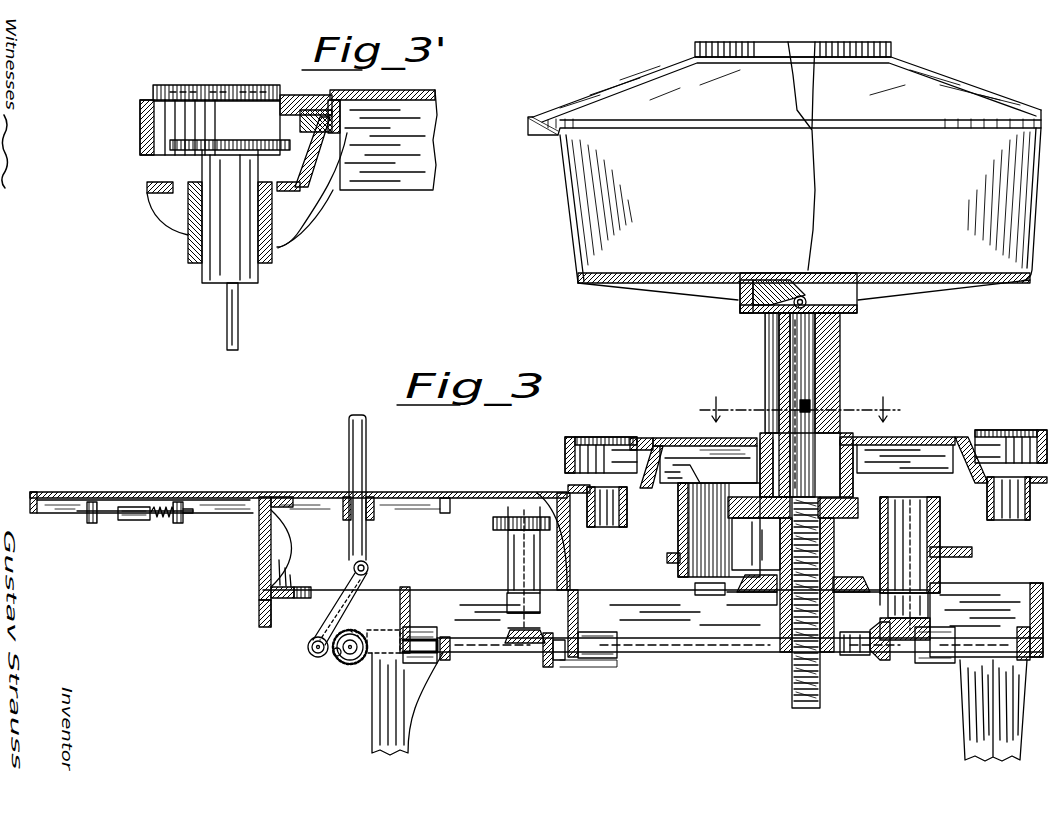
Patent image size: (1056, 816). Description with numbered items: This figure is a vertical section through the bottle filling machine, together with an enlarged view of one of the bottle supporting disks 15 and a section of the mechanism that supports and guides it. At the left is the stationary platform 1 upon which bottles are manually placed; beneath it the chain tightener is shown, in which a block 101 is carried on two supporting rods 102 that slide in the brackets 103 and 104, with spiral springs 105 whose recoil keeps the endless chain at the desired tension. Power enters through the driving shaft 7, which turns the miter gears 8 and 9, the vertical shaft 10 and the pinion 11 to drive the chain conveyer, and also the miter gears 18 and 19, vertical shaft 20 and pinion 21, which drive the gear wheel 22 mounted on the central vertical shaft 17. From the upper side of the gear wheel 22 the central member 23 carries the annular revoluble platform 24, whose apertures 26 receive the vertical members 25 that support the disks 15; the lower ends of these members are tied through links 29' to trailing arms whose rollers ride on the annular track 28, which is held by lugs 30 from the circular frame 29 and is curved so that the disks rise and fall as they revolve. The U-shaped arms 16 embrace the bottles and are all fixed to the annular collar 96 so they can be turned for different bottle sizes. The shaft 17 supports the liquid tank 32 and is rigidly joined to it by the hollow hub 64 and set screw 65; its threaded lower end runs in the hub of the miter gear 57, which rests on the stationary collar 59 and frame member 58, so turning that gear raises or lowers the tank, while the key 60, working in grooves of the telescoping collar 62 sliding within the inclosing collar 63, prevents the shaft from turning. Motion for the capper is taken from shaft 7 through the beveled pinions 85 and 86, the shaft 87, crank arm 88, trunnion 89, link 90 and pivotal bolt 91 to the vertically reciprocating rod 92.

In FIG. 3, the stationary platform 1 is at (102, 492).
In FIG. 3, the driving shaft 7 is at (973, 650).
In FIG. 3, the miter gear 8 is at (545, 667).
In FIG. 3, the miter gear 9 is at (510, 643).
In FIG. 3, the vertical shaft 10 is at (527, 563).
In FIG. 3, the pinion 11 is at (493, 523).
In FIG. 3', the bottle supporting disks 15 is at (200, 147).
In FIG. 3', the U-shaped arms 16 is at (163, 123).
In FIG. 3, the U-shaped arms 16 is at (593, 450).
In FIG. 3, the vertical shaft 17 is at (821, 377).
In FIG. 3, the miter gear 18 is at (873, 656).
In FIG. 3, the miter gear 19 is at (898, 645).
In FIG. 3, the vertical shaft 20 is at (900, 560).
In FIG. 3, the pinion 21 is at (927, 510).
In FIG. 3, the gear wheel 22 is at (730, 507).
In FIG. 3, the central member 23 is at (857, 467).
In FIG. 3', the revoluble platform 24 is at (427, 91).
In FIG. 3, the revoluble platform 24 is at (955, 437).
In FIG. 3', the vertical members 25 is at (188, 247).
In FIG. 3, the apertures 26 is at (613, 513).
In FIG. 3, the annular track 28 is at (977, 550).
In FIG. 3, the circular frame 29 is at (658, 568).
In FIG. 3', the links 29' is at (254, 316).
In FIG. 3, the lugs 30 is at (700, 585).
In FIG. 3, the liquid tank 32 is at (784, 177).
In FIG. 3, the miter gear 57 is at (843, 577).
In FIG. 3, the stationary frame member 58 is at (752, 613).
In FIG. 3, the stationary collar 59 is at (777, 596).
In FIG. 3, the key 60 is at (779, 363).
In FIG. 3, the telescoping collar 62 is at (835, 390).
In FIG. 3, the inclosing telescoping collar 63 is at (765, 327).
In FIG. 3, the hollow hub 64 is at (831, 347).
In FIG. 3, the set screw 65 is at (830, 400).
In FIG. 3, the beveled pinion 85 is at (367, 630).
In FIG. 3, the beveled pinion 86 is at (352, 632).
In FIG. 3, the shaft 87 is at (350, 664).
In FIG. 3, the crank arm 88 is at (334, 660).
In FIG. 3, the trunnion 89 is at (310, 653).
In FIG. 3, the link 90 is at (323, 613).
In FIG. 3, the pivotal bolt 91 is at (368, 565).
In FIG. 3, the vertically reciprocating rod 92 is at (366, 462).
In FIG. 3', the annular collar 96 is at (307, 97).
In FIG. 3, the annular collar 96 is at (647, 447).
In FIG. 3, the block 101 is at (133, 520).
In FIG. 3, the supporting rods 102 is at (82, 513).
In FIG. 3, the bracket 103 is at (92, 523).
In FIG. 3, the bracket 104 is at (180, 523).
In FIG. 3, the spiral springs 105 is at (160, 520).